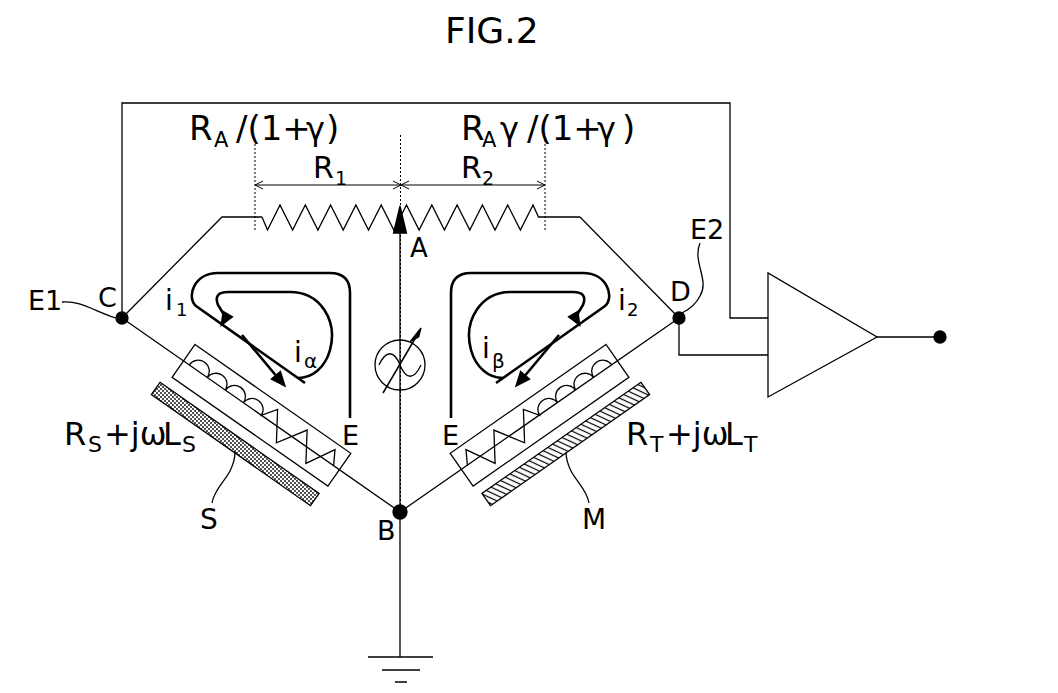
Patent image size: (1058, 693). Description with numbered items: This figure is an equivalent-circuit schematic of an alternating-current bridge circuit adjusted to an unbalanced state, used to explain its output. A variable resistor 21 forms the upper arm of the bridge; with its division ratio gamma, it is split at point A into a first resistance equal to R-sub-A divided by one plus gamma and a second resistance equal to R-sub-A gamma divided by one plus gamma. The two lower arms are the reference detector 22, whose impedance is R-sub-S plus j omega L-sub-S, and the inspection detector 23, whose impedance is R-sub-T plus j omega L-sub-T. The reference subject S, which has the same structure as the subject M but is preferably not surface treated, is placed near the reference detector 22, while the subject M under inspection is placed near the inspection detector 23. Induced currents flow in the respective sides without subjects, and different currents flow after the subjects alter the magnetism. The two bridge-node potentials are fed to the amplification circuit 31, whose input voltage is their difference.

The variable resistor (potentiometer) R_A 21 is at (508, 206).
The reference detector 22 is at (173, 376).
The inspection detector 23 is at (629, 377).
The amplification circuit 31 is at (823, 368).